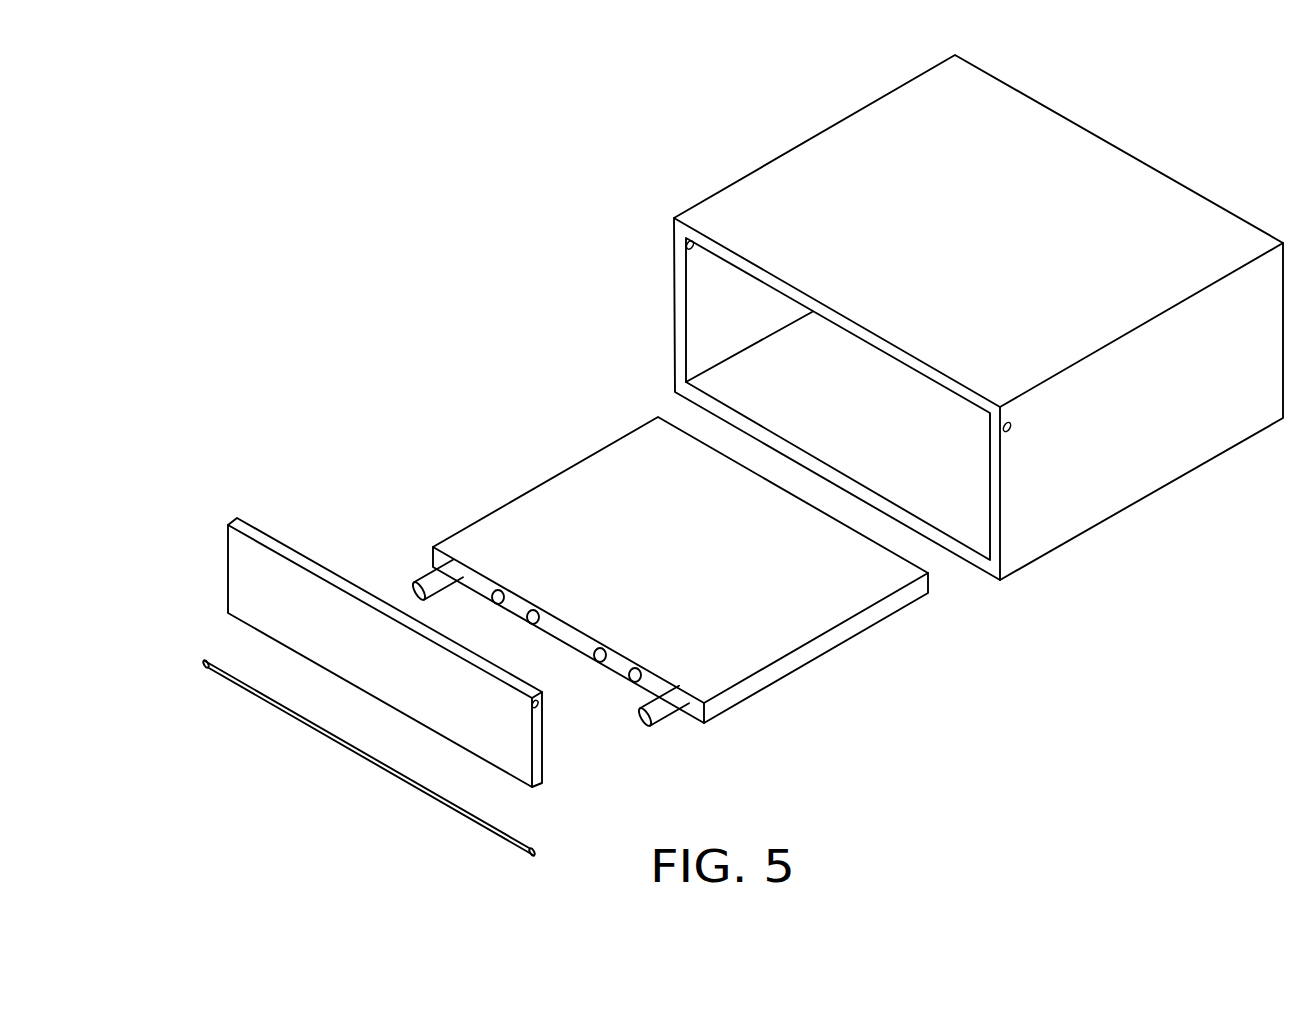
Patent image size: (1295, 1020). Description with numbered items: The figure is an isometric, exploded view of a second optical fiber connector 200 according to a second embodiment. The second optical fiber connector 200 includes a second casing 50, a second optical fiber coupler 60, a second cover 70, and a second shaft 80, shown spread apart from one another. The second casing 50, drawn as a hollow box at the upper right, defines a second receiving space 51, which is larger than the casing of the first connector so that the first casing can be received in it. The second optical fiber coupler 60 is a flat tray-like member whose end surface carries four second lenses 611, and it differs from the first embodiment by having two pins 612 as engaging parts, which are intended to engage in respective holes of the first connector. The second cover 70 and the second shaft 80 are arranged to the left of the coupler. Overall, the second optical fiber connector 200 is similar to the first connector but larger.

The second optical fiber connector 200 is at (480, 215).
The second casing 50 is at (956, 359).
The second receiving space 51 is at (953, 483).
The second optical fiber coupler 60 is at (641, 564).
The second lenses 611 is at (533, 611).
The pins 612 is at (428, 577).
The second cover 70 is at (262, 538).
The second shaft 80 is at (222, 672).